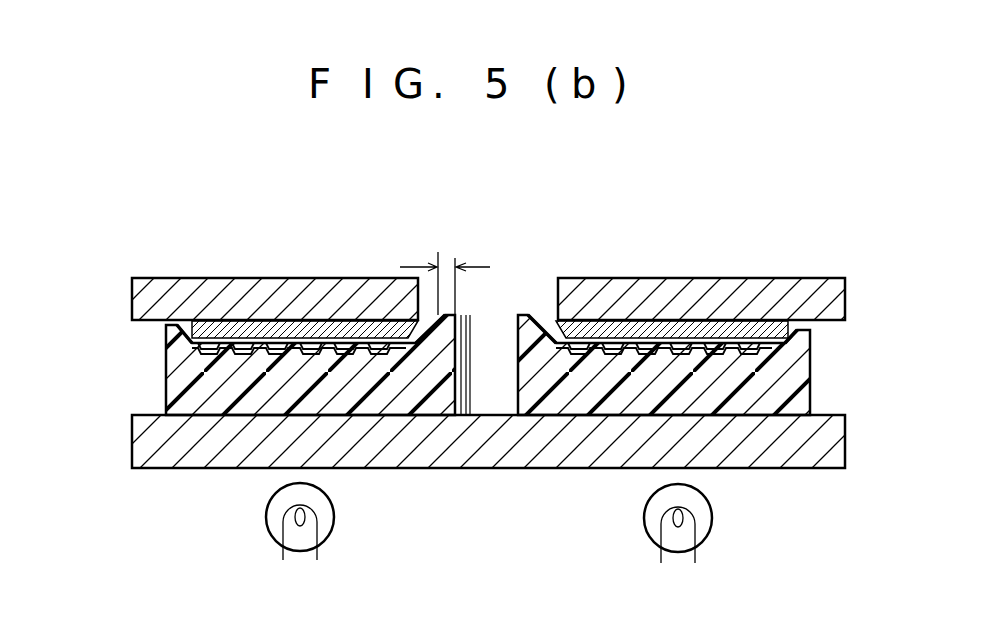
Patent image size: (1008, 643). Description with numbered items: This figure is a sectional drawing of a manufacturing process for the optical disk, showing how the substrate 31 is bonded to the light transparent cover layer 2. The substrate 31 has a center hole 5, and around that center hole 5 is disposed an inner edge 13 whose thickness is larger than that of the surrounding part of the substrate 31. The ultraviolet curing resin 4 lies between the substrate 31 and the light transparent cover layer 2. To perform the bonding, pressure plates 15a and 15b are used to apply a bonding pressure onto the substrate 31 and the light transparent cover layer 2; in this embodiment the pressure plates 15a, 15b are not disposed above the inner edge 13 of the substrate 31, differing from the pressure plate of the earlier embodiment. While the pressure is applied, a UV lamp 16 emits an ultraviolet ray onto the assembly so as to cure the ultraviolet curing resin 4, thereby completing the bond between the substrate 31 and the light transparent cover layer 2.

The light transparent cover layer 2 is at (424, 246).
The ultraviolet curing resin 4 is at (490, 241).
The center hole 5 is at (536, 431).
The inner edge 13 is at (495, 257).
The pressure plate 15a is at (520, 490).
The pressure plate 15b is at (519, 250).
The UV lamp 16 is at (554, 550).
The substrate 31 is at (446, 440).